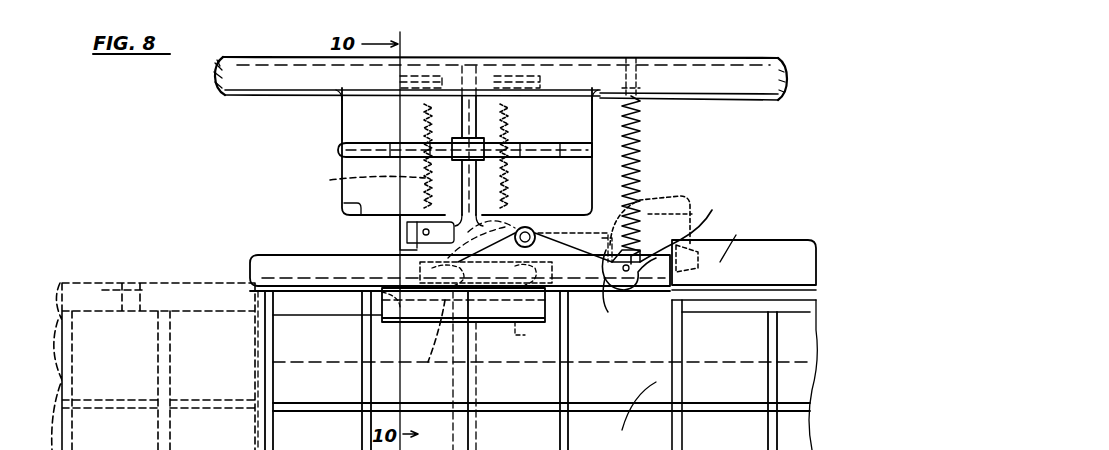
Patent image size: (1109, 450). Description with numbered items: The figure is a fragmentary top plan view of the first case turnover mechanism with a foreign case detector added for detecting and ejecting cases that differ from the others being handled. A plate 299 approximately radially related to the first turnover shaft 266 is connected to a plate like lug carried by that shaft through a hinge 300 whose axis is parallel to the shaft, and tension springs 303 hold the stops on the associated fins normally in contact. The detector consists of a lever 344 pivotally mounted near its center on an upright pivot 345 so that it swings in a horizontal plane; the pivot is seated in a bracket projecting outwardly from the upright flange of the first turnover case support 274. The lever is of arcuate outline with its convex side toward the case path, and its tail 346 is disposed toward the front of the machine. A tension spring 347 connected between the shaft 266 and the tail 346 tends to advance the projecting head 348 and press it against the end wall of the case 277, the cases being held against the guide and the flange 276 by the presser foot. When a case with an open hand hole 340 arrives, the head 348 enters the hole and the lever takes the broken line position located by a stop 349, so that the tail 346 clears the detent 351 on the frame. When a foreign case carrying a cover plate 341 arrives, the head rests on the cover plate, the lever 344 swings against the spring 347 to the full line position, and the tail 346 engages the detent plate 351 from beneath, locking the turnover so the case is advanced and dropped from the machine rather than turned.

The first turnover shaft 266 is at (216, 82).
The first turnover case support 274 is at (520, 360).
The flange 276 is at (265, 262).
The case 277 is at (270, 352).
The plate 299 is at (344, 207).
The hinge 300 is at (338, 151).
The tension springs 303 is at (353, 179).
The hand hole 340 is at (365, 363).
The cover plate 341 is at (382, 318).
The lever 344 is at (688, 214).
The pivot 345 is at (530, 228).
The tail 346 is at (704, 236).
The tension spring 347 is at (648, 164).
The head portion 348 is at (416, 347).
The stop 349 is at (512, 322).
The detent 351 is at (699, 262).